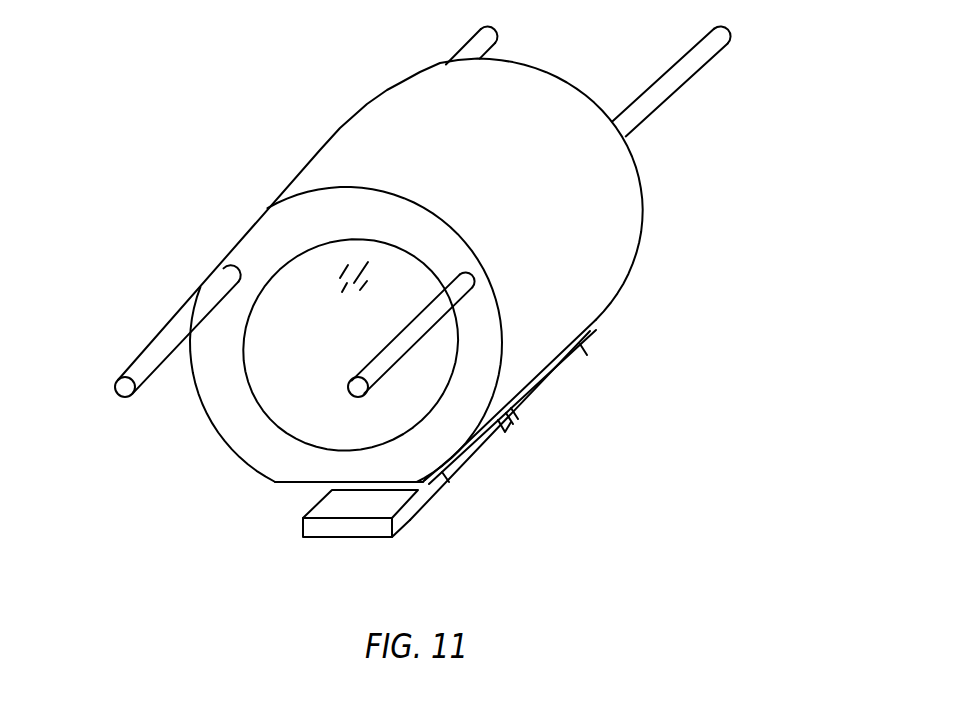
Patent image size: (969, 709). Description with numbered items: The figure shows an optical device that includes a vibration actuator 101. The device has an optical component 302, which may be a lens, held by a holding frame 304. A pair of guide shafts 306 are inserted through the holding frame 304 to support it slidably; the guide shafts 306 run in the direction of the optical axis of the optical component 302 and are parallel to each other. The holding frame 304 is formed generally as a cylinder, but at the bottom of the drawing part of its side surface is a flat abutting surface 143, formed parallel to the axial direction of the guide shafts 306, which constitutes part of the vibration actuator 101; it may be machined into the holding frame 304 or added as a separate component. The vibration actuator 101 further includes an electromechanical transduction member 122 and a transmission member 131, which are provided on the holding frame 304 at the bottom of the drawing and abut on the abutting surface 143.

The vibration actuator 101 is at (428, 300).
The holding frame 304 is at (522, 72).
The guide shafts 306 is at (167, 323).
The optical component 302 is at (277, 390).
The abutting surface 143 is at (310, 484).
The transmission member 131 is at (408, 517).
The electromechanical transduction member 122 is at (533, 404).